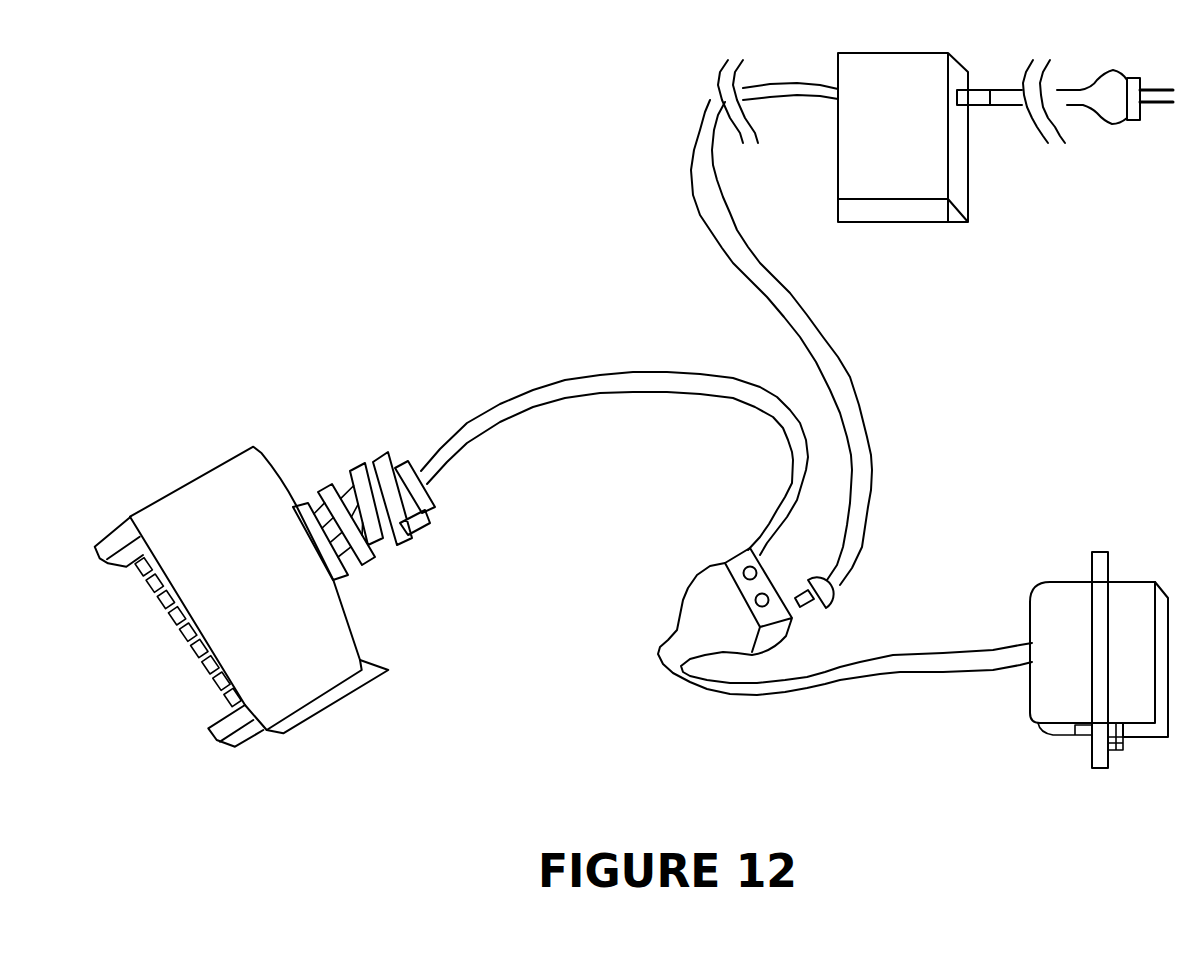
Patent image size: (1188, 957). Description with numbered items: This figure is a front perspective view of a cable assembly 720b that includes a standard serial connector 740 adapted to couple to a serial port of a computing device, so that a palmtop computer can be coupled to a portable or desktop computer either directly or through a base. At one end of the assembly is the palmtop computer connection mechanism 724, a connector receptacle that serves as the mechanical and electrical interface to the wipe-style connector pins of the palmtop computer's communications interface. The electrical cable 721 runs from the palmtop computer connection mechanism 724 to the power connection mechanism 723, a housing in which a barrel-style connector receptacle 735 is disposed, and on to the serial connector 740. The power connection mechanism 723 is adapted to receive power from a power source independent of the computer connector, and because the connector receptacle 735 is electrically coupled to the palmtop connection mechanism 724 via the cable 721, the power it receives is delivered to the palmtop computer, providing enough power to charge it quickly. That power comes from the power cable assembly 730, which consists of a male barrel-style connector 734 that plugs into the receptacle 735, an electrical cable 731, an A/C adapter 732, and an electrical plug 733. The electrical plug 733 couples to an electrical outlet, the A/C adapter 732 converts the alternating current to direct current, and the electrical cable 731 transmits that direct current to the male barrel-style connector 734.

The cable assembly 720b is at (165, 67).
The electrical cable 721 is at (592, 407).
The power connection mechanism 723 is at (734, 631).
The palmtop computer connection mechanism 724 is at (264, 610).
The power cable assembly 730 is at (858, 372).
The electrical cable 731 is at (782, 295).
The A/C adapter 732 is at (958, 197).
The electrical plug 733 is at (1110, 118).
The male barrel-style connector 734 is at (835, 592).
The barrel-style connector receptacle 735 is at (779, 585).
The serial connector 740 is at (1079, 671).